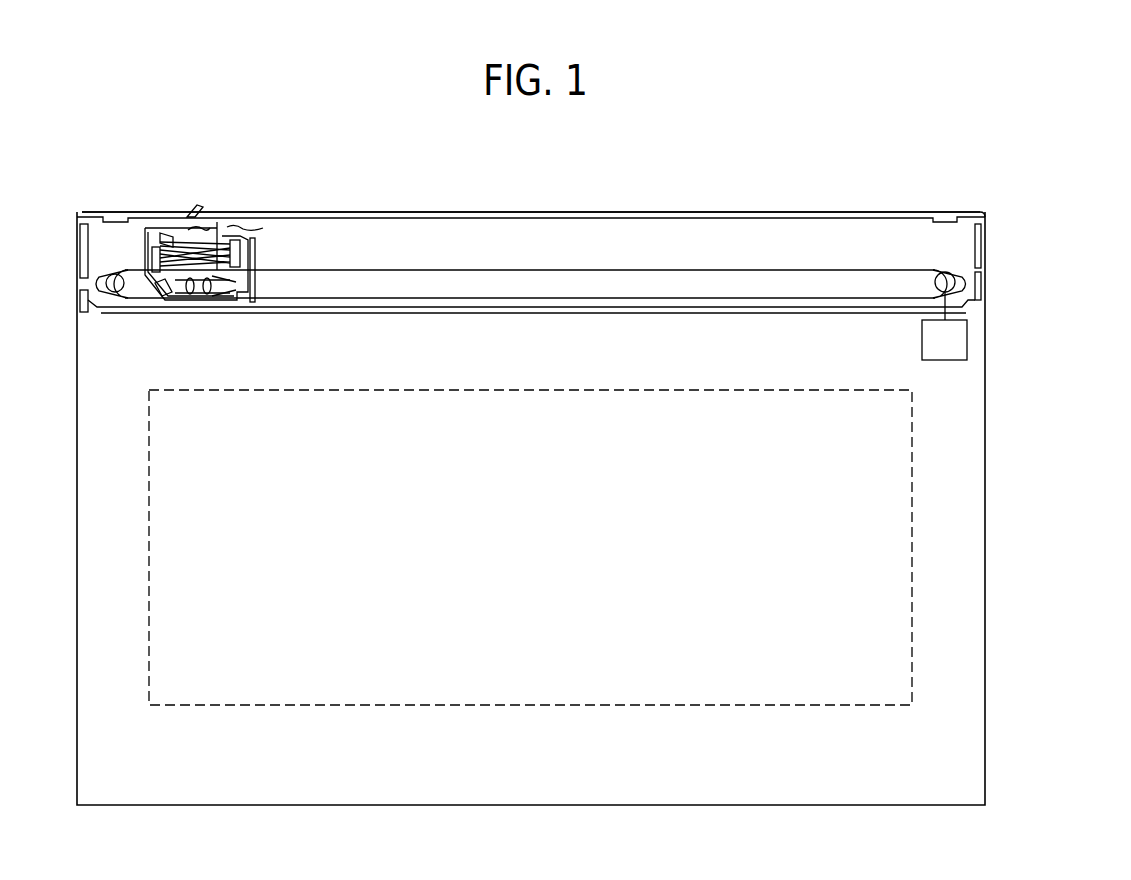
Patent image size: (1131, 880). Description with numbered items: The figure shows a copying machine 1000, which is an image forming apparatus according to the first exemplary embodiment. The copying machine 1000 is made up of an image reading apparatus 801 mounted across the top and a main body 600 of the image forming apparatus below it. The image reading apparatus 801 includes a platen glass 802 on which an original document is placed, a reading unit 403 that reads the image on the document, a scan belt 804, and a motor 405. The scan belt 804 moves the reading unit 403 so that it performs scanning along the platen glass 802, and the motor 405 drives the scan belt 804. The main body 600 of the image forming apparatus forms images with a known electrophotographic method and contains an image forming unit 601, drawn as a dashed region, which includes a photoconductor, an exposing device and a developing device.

The copying machine 1000 is at (986, 135).
The main body of the image forming apparatus 600 is at (1015, 516).
The image forming unit 601 is at (912, 608).
The image reading apparatus 801 is at (370, 185).
The platen glass 802 is at (603, 211).
The scan belt 804 is at (437, 300).
The reading unit 403 is at (211, 320).
The motor 405 is at (922, 340).